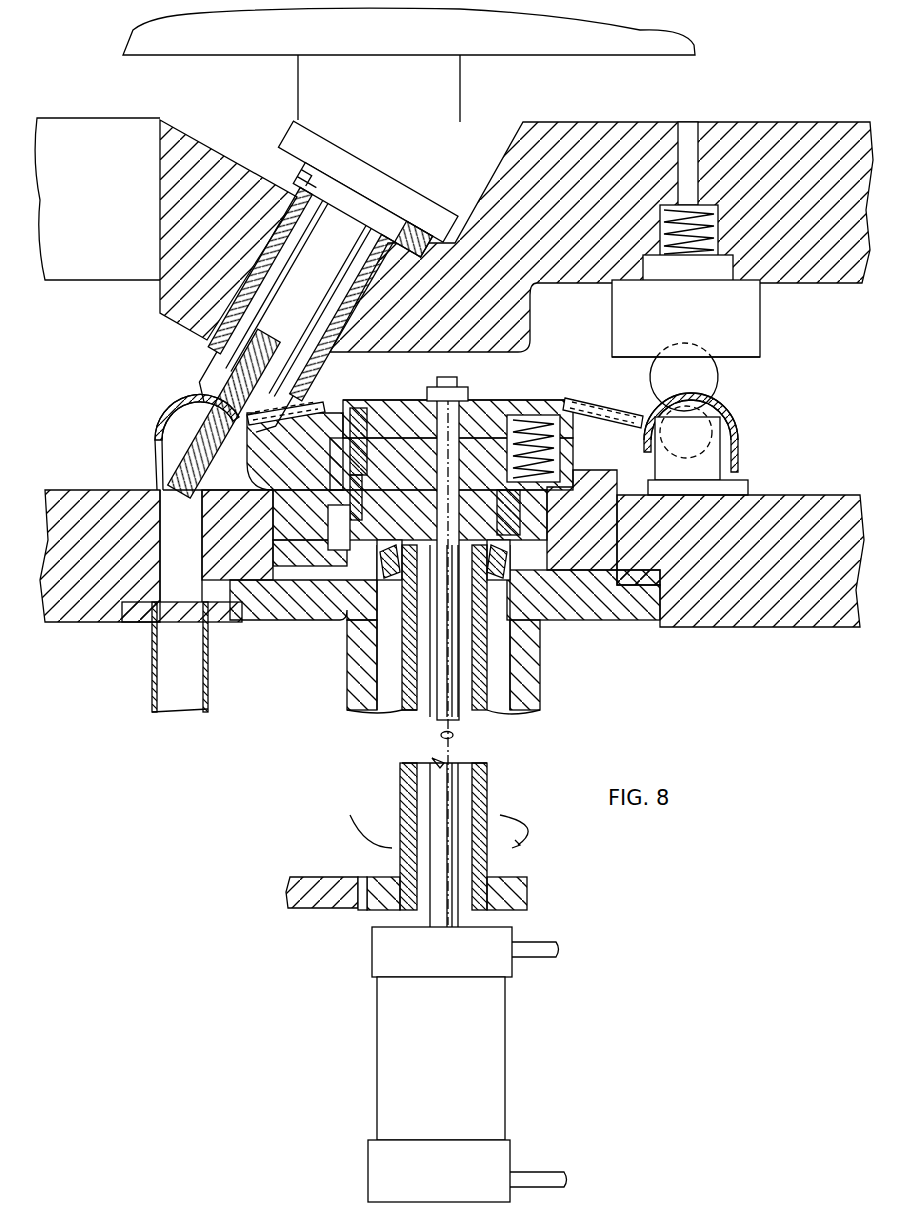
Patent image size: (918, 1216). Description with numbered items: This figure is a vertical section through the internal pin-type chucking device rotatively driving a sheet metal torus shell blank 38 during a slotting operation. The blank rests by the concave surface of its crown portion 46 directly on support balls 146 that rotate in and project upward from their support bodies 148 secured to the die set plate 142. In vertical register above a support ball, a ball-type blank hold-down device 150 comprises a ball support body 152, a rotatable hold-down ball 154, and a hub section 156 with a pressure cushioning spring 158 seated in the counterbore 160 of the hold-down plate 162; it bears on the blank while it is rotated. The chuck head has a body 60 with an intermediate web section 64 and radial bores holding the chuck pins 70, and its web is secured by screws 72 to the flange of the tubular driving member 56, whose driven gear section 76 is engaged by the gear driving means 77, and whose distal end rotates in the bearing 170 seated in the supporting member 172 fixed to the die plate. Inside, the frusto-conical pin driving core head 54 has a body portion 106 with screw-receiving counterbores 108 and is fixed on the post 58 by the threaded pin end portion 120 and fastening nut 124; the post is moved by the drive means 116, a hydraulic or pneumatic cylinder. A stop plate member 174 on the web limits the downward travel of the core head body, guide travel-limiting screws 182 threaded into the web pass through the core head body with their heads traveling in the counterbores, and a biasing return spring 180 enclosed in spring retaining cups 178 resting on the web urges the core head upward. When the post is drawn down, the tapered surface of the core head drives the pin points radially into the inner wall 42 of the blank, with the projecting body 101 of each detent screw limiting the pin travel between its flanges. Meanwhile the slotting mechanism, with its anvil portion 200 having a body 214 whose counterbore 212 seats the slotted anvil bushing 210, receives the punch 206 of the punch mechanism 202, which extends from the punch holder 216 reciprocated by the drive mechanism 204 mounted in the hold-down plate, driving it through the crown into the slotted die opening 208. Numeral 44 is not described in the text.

The drive mechanism 204 is at (463, 80).
The hold-down plate 162 is at (778, 135).
The pressure cushioning spring 158 is at (712, 228).
The counterbore 160 is at (668, 232).
The hub section 156 is at (725, 268).
The ball-type blank hold-down device 150 is at (762, 300).
The ball support body 152 is at (748, 335).
The hold-down ball 154 is at (703, 388).
The shell blank 38 is at (166, 405).
The crown portion 46 is at (722, 405).
The balls 146 is at (716, 416).
The support bodies 148 is at (720, 455).
The inner wall 42 is at (686, 442).
The base plate 44 is at (740, 468).
The die set plate 142 is at (822, 505).
The body 60 is at (600, 545).
The screw-receiving counterbores 108 is at (400, 398).
The body portion 106 is at (415, 398).
The body 214 is at (222, 492).
The anvil portion 200 is at (156, 478).
The supporting member 172 is at (545, 670).
The bearing 170 is at (512, 583).
The web section 64 is at (447, 651).
The threaded pin end portion 120 is at (457, 381).
The fastening nut 124 is at (470, 394).
The guide travel-limiting screws 182 is at (366, 445).
The stop disc or plate member 174 is at (405, 485).
The spring retaining cups 178 is at (560, 472).
The biasing return spring 180 is at (510, 434).
The screws 72 is at (521, 510).
The pin driving core head 54 is at (540, 398).
The slotted die opening 208 is at (270, 427).
The chuck pins 70 is at (295, 425).
The punch holder 216 is at (300, 227).
The punch 206 is at (268, 322).
The projecting body 101 is at (300, 380).
The punch mechanism 202 is at (204, 352).
The anvil bushing 210 is at (190, 430).
The counterbore 212 is at (178, 452).
The driving member 56 is at (488, 767).
The post 58 is at (437, 760).
The driven gear section 76 is at (505, 893).
The gear driving means 77 is at (322, 888).
The drive means 116 is at (390, 1025).